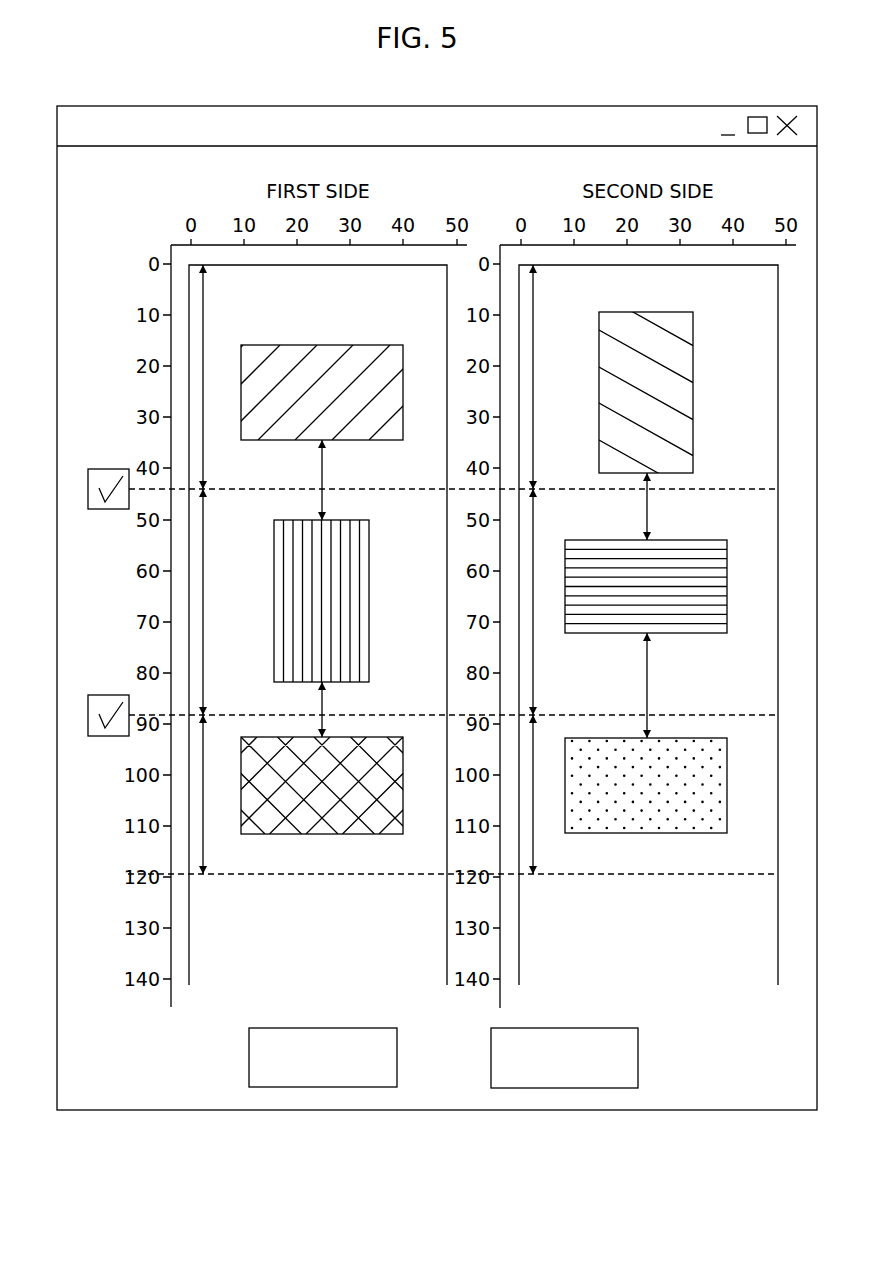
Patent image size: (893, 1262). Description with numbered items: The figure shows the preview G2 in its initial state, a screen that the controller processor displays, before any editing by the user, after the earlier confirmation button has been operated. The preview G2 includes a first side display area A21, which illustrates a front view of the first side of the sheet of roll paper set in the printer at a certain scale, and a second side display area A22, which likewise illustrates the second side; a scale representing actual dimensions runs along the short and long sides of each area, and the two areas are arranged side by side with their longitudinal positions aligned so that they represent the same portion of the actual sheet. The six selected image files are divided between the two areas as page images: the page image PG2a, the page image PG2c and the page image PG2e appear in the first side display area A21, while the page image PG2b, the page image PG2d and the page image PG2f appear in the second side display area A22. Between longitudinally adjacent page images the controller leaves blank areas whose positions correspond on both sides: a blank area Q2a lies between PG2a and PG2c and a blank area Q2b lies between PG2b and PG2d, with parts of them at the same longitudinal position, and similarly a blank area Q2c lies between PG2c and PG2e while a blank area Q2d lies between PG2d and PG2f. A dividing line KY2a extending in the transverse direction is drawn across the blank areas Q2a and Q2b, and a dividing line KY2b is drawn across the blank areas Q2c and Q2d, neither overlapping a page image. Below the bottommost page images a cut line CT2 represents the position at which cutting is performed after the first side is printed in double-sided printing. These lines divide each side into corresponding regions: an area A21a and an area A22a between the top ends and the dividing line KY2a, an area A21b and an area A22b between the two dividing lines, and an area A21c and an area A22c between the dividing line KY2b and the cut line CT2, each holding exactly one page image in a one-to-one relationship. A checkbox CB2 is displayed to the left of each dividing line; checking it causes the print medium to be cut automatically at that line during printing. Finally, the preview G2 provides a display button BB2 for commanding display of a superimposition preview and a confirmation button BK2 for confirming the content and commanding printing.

The preview G2 is at (556, 93).
The first side display area A21 is at (429, 263).
The second side display area A22 is at (759, 264).
The area between top end and dividing line KY2a in first side display area A21a is at (230, 377).
The area between dividing lines KY2a and KY2b in first side display area A21b is at (230, 602).
The area between dividing line KY2b and cut line CT2 in first side display area A21c is at (229, 794).
The area between top end and dividing line KY2a in second side display area A22a is at (562, 377).
The area between dividing lines KY2a and KY2b in second side display area A22b is at (562, 602).
The area between dividing line KY2b and cut line CT2 in second side display area A22c is at (562, 794).
The page image PG2a is at (343, 333).
The page image PG2b is at (670, 300).
The page image PG2c is at (369, 600).
The page image PG2d is at (727, 590).
The page image PG2e is at (320, 834).
The page image PG2f is at (645, 833).
The dividing line KY2a is at (263, 488).
The dividing line KY2b is at (243, 714).
The blank area Q2a is at (366, 480).
The blank area Q2b is at (691, 506).
The blank area Q2c is at (366, 709).
The blank area Q2d is at (691, 685).
The checkbox CB2 is at (88, 489).
The cut line CT2 is at (322, 876).
The display button BB2 is at (397, 1052).
The confirmation button BK2 is at (638, 1052).